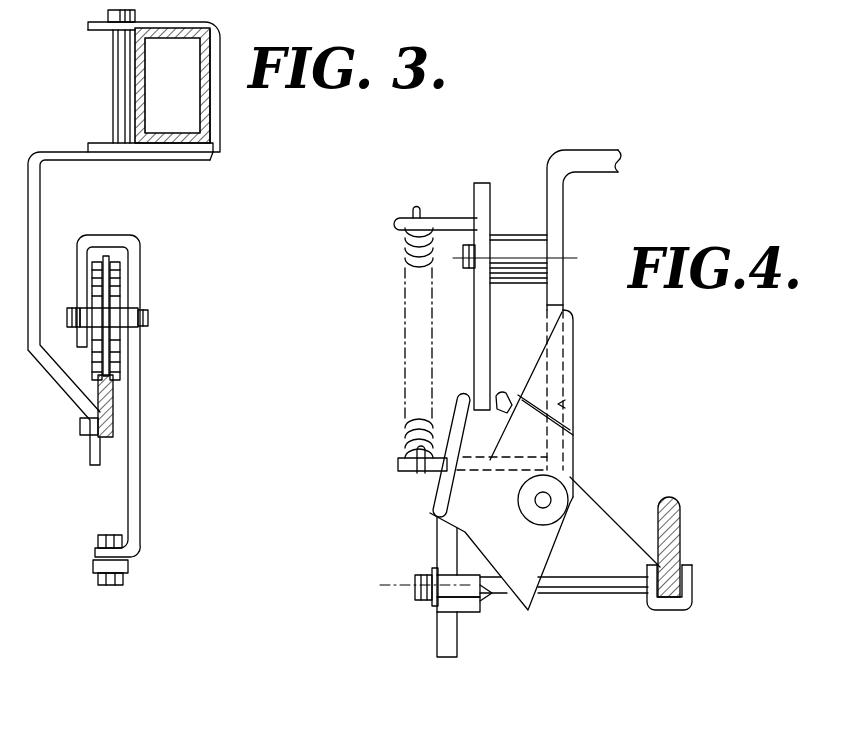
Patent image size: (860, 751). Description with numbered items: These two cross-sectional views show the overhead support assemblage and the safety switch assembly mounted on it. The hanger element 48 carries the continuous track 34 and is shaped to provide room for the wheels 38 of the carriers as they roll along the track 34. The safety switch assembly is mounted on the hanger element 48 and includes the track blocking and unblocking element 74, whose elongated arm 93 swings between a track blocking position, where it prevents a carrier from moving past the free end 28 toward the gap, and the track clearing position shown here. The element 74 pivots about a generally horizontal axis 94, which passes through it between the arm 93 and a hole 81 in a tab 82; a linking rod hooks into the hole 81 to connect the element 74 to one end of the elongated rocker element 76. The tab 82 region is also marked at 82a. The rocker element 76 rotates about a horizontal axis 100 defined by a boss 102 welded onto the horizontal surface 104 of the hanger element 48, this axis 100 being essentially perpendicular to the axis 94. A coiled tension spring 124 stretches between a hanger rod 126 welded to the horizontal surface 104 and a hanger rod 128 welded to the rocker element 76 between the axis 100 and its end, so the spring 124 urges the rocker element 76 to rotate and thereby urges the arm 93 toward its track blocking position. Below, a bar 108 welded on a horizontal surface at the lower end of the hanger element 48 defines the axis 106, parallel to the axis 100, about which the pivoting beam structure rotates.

In FIG. 3, the hanger element 48 is at (40, 215).
In FIG. 3, the wheels 38 is at (105, 265).
In FIG. 3, the continuous track 34 is at (113, 405).
In FIG. 4, the track blocking and unblocking element 74 is at (573, 390).
In FIG. 4, the elongated arm 93 is at (557, 350).
In FIG. 4, the horizontal surface 104 is at (559, 293).
In FIG. 4, the rocker element 76 is at (487, 193).
In FIG. 4, the hanger rod 128 is at (447, 218).
In FIG. 4, the coiled tension spring 124 is at (405, 247).
In FIG. 4, the hanger rod 126 is at (398, 467).
In FIG. 4, the boss 102 is at (519, 240).
In FIG. 4, the axis 100 is at (572, 258).
In FIG. 4, the hole 81 is at (432, 513).
In FIG. 4, the tab 82a is at (505, 392).
In FIG. 4, the tab 82 is at (460, 493).
In FIG. 4, the axis 94 is at (537, 502).
In FIG. 4, the bar 108 is at (618, 593).
In FIG. 4, the axis 106 is at (408, 578).
In FIG. 4, the free end 28 is at (683, 528).